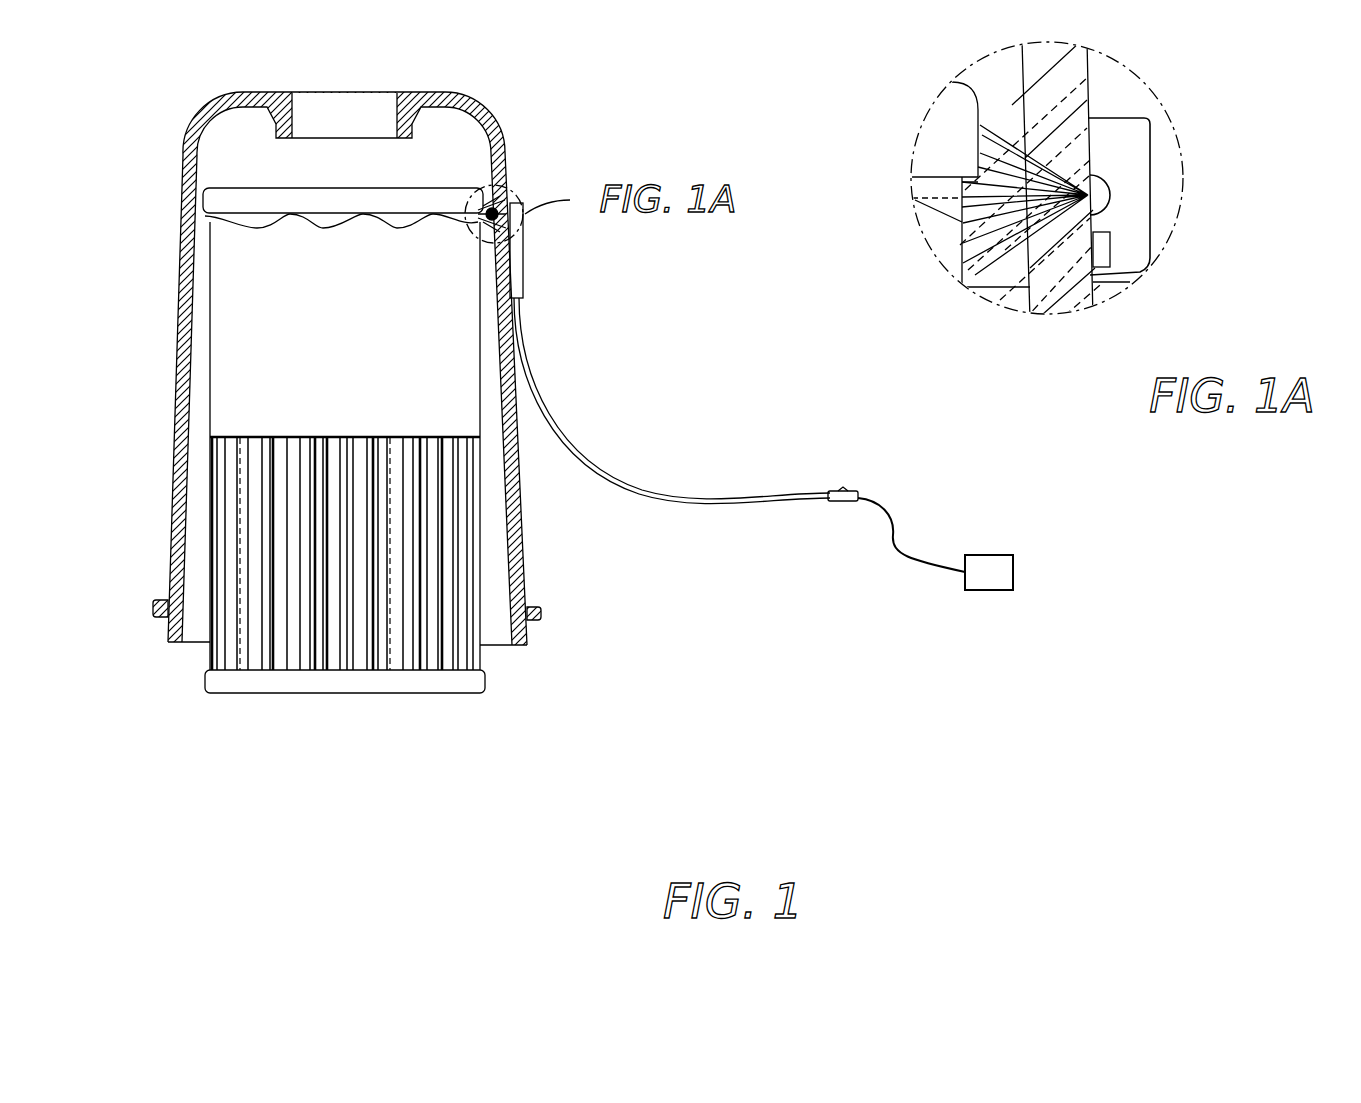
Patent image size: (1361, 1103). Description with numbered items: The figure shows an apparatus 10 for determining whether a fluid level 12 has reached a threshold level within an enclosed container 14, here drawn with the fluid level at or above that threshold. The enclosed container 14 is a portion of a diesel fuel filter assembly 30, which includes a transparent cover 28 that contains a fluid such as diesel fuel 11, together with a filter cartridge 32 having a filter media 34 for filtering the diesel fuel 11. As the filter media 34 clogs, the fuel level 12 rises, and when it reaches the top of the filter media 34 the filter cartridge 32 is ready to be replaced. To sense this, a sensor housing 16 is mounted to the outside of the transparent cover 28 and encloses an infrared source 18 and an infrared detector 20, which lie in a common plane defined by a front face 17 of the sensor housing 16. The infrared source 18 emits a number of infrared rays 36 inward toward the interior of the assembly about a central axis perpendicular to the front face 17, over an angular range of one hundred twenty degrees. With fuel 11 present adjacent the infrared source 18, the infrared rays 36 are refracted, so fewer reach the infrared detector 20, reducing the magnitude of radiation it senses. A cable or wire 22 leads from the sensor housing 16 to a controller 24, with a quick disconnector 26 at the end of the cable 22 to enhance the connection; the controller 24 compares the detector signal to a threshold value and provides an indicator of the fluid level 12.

In FIG. 1, the apparatus 10 is at (682, 573).
In FIG. 1, the diesel fuel 11 is at (342, 520).
In FIG. 1, the fluid level 12 is at (272, 229).
In FIG. 1A, the fluid level 12 is at (918, 203).
In FIG. 1, the enclosed container 14 is at (535, 503).
In FIG. 1, the sensor housing 16 is at (523, 278).
In FIG. 1A, the sensor housing 16 is at (1133, 153).
In FIG. 1A, the front face 17 is at (1130, 282).
In FIG. 1A, the infrared source 18 is at (1110, 195).
In FIG. 1A, the infrared detector 20 is at (1110, 250).
In FIG. 1, the cable or wire 22 is at (737, 494).
In FIG. 1, the controller 24 is at (1013, 572).
In FIG. 1, the quick disconnector 26 is at (858, 496).
In FIG. 1, the transparent cover 28 is at (527, 577).
In FIG. 1, the diesel fuel filter assembly 30 is at (543, 630).
In FIG. 1, the filter cartridge 32 is at (252, 188).
In FIG. 1, the filter media 34 is at (480, 658).
In FIG. 1A, the infrared rays 36 is at (1000, 125).